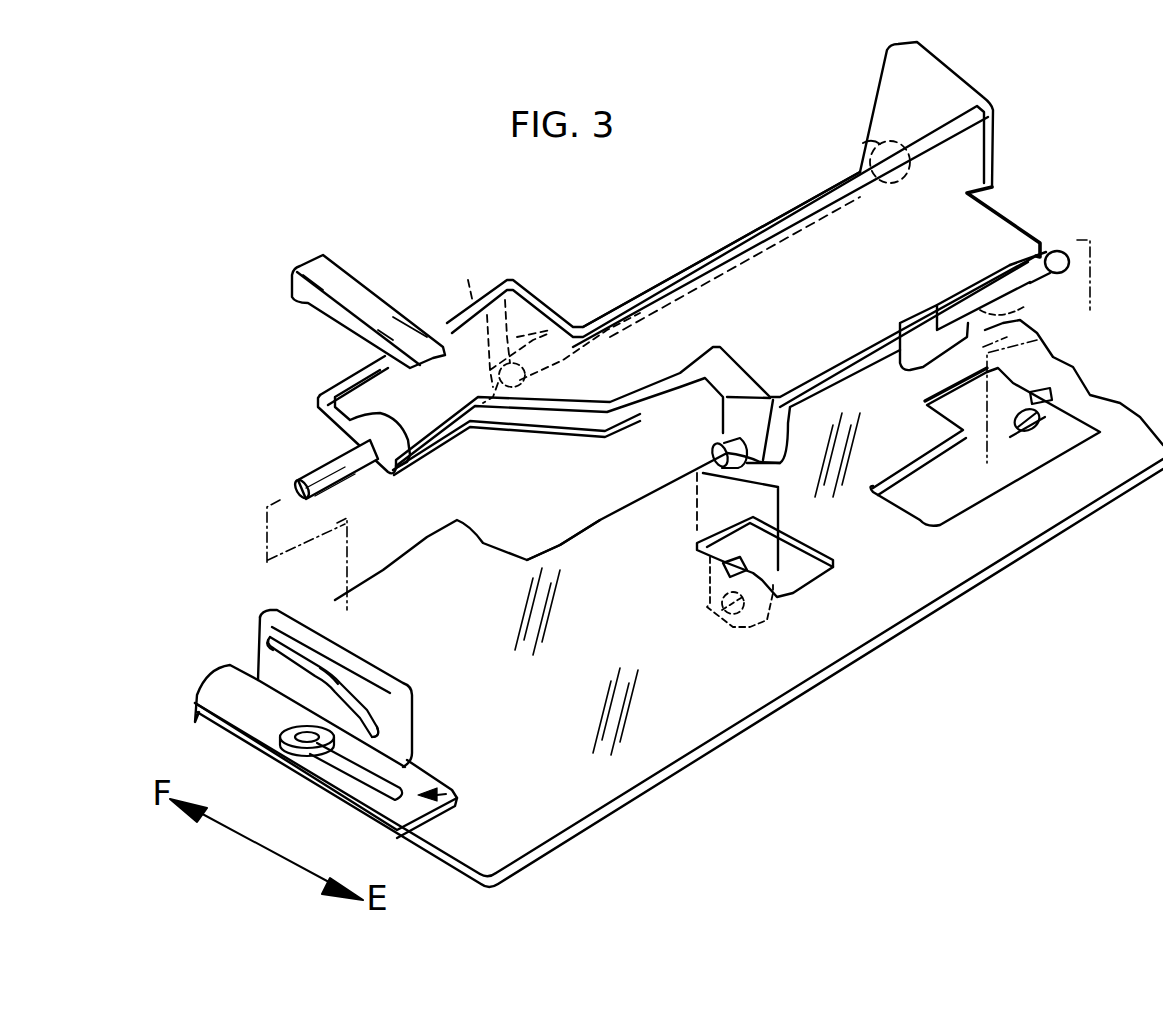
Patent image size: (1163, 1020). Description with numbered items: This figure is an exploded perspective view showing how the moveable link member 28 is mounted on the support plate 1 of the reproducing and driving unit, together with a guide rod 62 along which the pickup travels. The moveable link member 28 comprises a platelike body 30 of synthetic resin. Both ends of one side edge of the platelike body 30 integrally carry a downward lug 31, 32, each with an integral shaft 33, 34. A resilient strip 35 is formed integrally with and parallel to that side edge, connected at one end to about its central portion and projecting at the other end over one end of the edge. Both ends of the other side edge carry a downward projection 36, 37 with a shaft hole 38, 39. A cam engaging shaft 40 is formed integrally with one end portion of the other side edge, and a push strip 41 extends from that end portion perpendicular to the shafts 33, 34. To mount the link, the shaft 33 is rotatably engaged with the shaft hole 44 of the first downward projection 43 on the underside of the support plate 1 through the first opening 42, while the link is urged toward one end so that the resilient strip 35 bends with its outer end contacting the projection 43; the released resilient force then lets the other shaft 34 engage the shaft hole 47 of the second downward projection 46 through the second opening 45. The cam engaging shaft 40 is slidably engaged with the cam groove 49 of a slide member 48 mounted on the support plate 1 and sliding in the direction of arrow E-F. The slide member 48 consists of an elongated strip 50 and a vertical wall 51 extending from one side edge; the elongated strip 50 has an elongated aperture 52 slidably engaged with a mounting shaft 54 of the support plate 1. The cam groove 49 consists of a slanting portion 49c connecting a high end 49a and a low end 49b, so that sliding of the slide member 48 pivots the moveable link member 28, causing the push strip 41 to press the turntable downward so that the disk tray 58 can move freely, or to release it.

The support plate 1 is at (673, 733).
The moveable link member 28 is at (736, 240).
The platelike body 30 is at (790, 207).
The downward lug 31 is at (1027, 305).
The downward lug 32 is at (730, 437).
The shaft 33 is at (1057, 251).
The shaft 34 is at (713, 460).
The resilient strip 35 is at (903, 357).
The downward projection 36 is at (863, 103).
The downward projection 37 is at (537, 326).
The shaft hole 38 is at (867, 147).
The shaft hole 39 is at (487, 383).
The cam engaging shaft 40 is at (317, 463).
The push strip 41 is at (360, 290).
The first opening 42 is at (947, 513).
The first downward projection 43 is at (1040, 447).
The shaft hole 44 is at (1010, 427).
The second opening 45 is at (807, 573).
The second downward projection 46 is at (773, 620).
The shaft hole 47 is at (733, 618).
The slide member 48 is at (457, 800).
The cam groove 49 is at (295, 660).
The high end 49a is at (283, 643).
The low end 49b is at (370, 727).
The slanting portion 49c is at (332, 675).
The elongated strip 50 is at (413, 777).
The vertical wall 51 is at (380, 683).
The elongated aperture 52 is at (360, 777).
The mounting shaft 54 is at (297, 748).
The disk tray 58 is at (570, 517).
The guide rod 62 is at (667, 262).